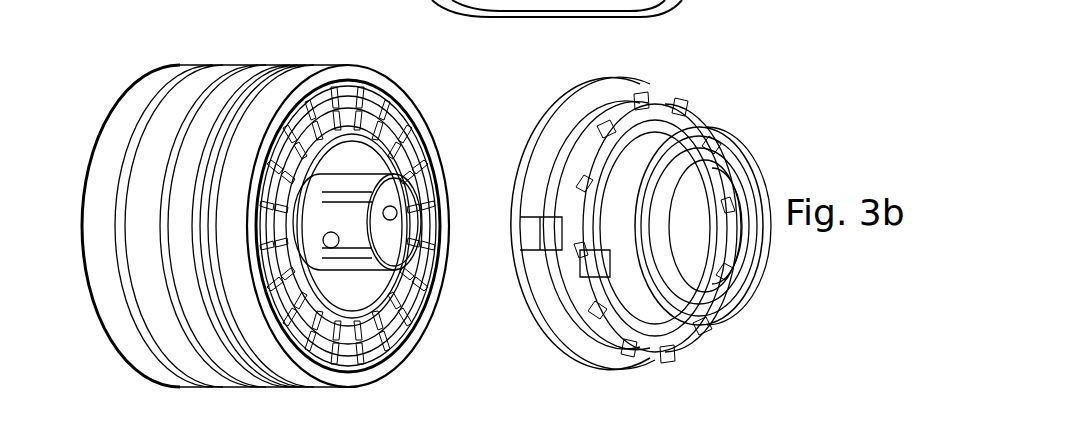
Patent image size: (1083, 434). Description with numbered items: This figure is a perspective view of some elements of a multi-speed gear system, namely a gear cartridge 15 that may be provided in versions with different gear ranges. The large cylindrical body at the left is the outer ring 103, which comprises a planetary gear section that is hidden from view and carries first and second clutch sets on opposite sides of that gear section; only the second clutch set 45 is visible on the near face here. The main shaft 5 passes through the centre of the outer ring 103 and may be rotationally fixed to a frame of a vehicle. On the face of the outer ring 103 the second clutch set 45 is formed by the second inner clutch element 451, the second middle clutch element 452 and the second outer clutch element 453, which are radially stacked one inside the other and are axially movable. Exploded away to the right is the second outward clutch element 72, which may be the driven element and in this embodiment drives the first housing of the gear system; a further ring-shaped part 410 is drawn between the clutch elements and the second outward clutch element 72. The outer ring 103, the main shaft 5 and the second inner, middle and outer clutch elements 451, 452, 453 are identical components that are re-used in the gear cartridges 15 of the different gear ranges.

The gear cartridge 15 is at (262, 38).
The outer ring 103 is at (212, 125).
The second clutch set 45 is at (533, 100).
The second inner clutch element 451 is at (400, 123).
The second middle clutch element 452 is at (348, 92).
The second outer clutch element 453 is at (325, 85).
The main shaft 5 is at (417, 143).
The retaining ring 410 is at (617, 100).
The second outward clutch element 72 is at (723, 123).